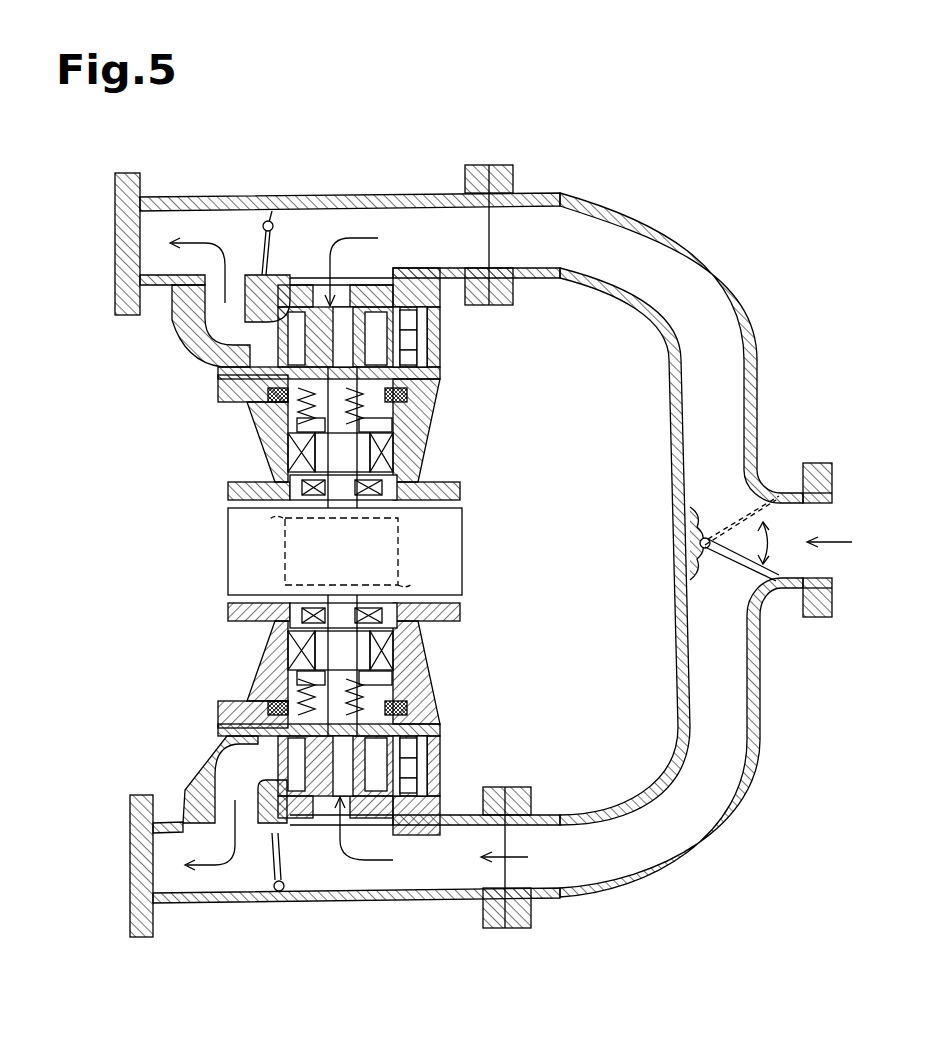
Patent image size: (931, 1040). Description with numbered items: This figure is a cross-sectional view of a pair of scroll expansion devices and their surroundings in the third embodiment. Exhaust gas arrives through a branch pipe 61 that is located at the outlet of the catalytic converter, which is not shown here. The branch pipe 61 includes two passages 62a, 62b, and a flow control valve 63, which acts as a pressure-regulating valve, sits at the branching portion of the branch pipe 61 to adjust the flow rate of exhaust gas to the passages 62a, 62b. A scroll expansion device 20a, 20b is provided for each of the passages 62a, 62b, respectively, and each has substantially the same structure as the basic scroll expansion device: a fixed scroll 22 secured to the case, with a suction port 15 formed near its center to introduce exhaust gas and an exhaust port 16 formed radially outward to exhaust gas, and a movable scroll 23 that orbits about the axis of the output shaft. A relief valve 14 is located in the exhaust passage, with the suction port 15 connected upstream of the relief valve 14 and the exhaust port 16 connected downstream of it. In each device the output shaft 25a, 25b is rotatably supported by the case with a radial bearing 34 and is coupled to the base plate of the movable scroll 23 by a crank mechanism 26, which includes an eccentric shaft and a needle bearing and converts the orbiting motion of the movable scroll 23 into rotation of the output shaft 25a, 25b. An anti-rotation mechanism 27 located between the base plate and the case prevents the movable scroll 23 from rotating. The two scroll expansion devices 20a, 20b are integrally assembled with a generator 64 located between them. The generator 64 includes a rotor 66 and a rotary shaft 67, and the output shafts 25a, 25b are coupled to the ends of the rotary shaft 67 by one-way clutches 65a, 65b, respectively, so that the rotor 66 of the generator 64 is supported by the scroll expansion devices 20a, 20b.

The relief valve 14 is at (266, 220).
The suction port 15 is at (334, 818).
The exhaust port 16 is at (222, 760).
The scroll expansion device 20a is at (250, 430).
The scroll expansion device 20b is at (258, 684).
The fixed scroll 22 is at (432, 345).
The movable scroll 23 is at (420, 327).
The output shaft 25a is at (300, 452).
The output shaft 25b is at (300, 648).
The crank mechanism 26 is at (404, 398).
The anti-rotation mechanism 27 is at (430, 372).
The radial bearing 34 is at (420, 435).
The branch pipe 61 is at (763, 678).
The passage 62a is at (392, 193).
The passage 62b is at (412, 897).
The flow control valve 63 is at (684, 550).
The generator 64 is at (227, 558).
The one-way clutch 65a is at (412, 462).
The one-way clutch 65b is at (412, 618).
The rotor 66 is at (399, 525).
The rotary shaft 67 is at (272, 520).